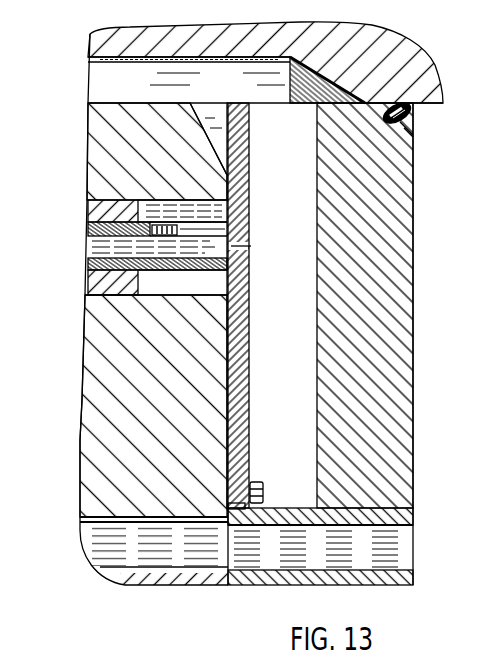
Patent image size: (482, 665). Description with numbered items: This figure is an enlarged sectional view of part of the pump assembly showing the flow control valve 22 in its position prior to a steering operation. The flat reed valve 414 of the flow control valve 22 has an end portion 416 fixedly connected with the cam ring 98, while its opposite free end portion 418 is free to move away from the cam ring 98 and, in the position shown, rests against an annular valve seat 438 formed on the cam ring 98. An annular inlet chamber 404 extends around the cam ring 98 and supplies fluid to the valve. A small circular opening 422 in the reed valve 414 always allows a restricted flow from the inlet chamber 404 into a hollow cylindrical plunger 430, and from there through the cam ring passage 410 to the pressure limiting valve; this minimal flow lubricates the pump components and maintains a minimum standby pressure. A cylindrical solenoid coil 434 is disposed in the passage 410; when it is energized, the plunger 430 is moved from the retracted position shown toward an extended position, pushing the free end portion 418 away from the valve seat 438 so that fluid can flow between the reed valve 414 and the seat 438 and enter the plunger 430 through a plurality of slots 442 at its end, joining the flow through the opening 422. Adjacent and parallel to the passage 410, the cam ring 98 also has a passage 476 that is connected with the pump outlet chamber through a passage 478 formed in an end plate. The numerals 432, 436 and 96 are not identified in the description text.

The flow control valve 22 is at (260, 161).
The cam ring 98 is at (85, 452).
The annular inlet chamber 404 is at (136, 99).
The cam ring passage 410 is at (163, 293).
The flat reed valve 414 is at (252, 397).
The end portion of reed valve 416 is at (242, 510).
The free end portion of reed valve 418 is at (246, 103).
The circular opening 422 is at (252, 246).
The hollow cylindrical plunger 430 is at (86, 262).
The o-ring seal 432 is at (431, 131).
The cylindrical solenoid coil 434 is at (90, 212).
The seal 436 is at (441, 186).
The annular valve seat 438 is at (249, 181).
The slots 442 is at (178, 226).
The passage 476 is at (150, 518).
The passage 478 is at (320, 578).
The cylinder 96 is at (447, 450).